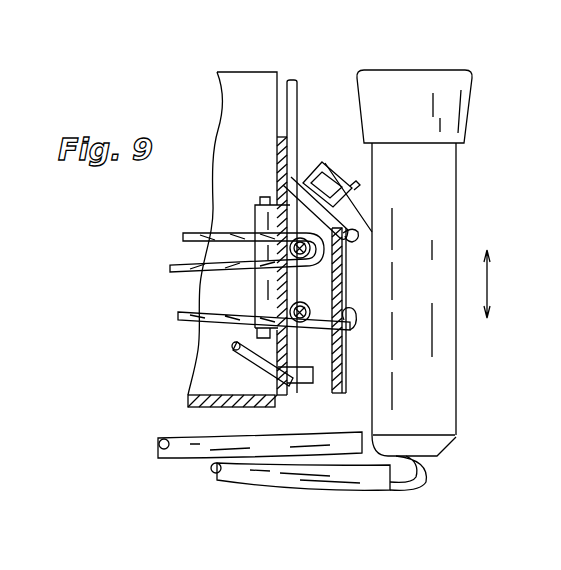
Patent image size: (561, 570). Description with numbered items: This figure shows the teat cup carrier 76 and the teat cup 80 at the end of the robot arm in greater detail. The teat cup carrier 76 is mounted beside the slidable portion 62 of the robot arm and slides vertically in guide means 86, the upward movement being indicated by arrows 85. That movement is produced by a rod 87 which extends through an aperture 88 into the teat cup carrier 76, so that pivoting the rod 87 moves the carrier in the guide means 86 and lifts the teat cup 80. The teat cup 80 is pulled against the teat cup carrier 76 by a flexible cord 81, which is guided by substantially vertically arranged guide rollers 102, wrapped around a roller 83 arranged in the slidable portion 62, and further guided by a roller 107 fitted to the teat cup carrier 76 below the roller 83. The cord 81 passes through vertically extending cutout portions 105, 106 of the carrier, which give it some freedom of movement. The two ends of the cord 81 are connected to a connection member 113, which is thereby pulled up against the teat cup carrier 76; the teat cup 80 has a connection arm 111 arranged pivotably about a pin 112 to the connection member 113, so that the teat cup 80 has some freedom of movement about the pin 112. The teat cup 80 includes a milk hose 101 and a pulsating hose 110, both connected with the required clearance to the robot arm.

The slidable portion 62 is at (273, 38).
The guide means 86 is at (297, 93).
The teat cup carrier 76 is at (337, 393).
The guide rollers 102 is at (257, 205).
The cord 81 is at (182, 266).
The roller 83 is at (322, 256).
The roller 107 is at (348, 306).
The pin 112 is at (349, 174).
The cutout portion 106 is at (352, 190).
The connection arm 111 is at (358, 230).
The cutout portion 105 is at (342, 280).
The connection member 113 is at (346, 377).
The teat cup 80 is at (445, 214).
The arrows 85 is at (490, 298).
The rod 87 is at (253, 360).
The aperture 88 is at (312, 369).
The pulsating hose 110 is at (175, 437).
The milk hose 101 is at (280, 478).